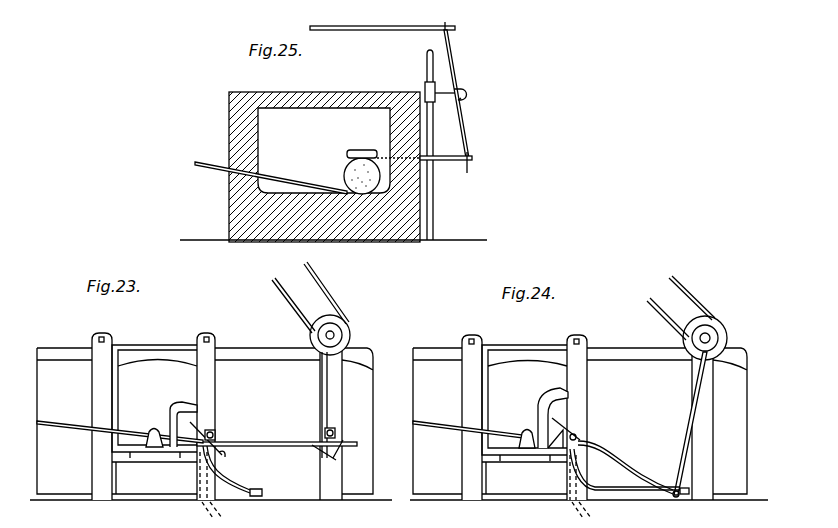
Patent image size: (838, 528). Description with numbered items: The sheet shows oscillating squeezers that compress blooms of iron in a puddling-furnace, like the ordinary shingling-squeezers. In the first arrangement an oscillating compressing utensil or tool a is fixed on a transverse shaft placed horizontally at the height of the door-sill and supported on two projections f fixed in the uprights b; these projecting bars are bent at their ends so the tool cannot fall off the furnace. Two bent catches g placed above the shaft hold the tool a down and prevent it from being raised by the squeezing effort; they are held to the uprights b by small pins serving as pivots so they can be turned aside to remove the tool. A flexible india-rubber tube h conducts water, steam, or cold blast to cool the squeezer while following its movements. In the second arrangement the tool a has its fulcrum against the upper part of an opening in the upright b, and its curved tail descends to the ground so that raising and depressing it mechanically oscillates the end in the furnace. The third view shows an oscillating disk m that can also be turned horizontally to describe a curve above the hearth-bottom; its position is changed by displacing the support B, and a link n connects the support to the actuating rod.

In FIG. 25, the oscillating disk m is at (362, 167).
In FIG. 25, the support B is at (440, 91).
In FIG. 25, the hook link n is at (464, 94).
In FIG. 23, the oscillating compressing utensil or tool a is at (234, 401).
In FIG. 24, the oscillating compressing utensil or tool a is at (581, 417).
In FIG. 23, the upright b is at (217, 416).
In FIG. 24, the upright b is at (587, 417).
In FIG. 23, the bent catch g is at (235, 442).
In FIG. 23, the tube h is at (232, 471).
In FIG. 24, the tube h is at (625, 467).
In FIG. 23, the projection f is at (223, 457).